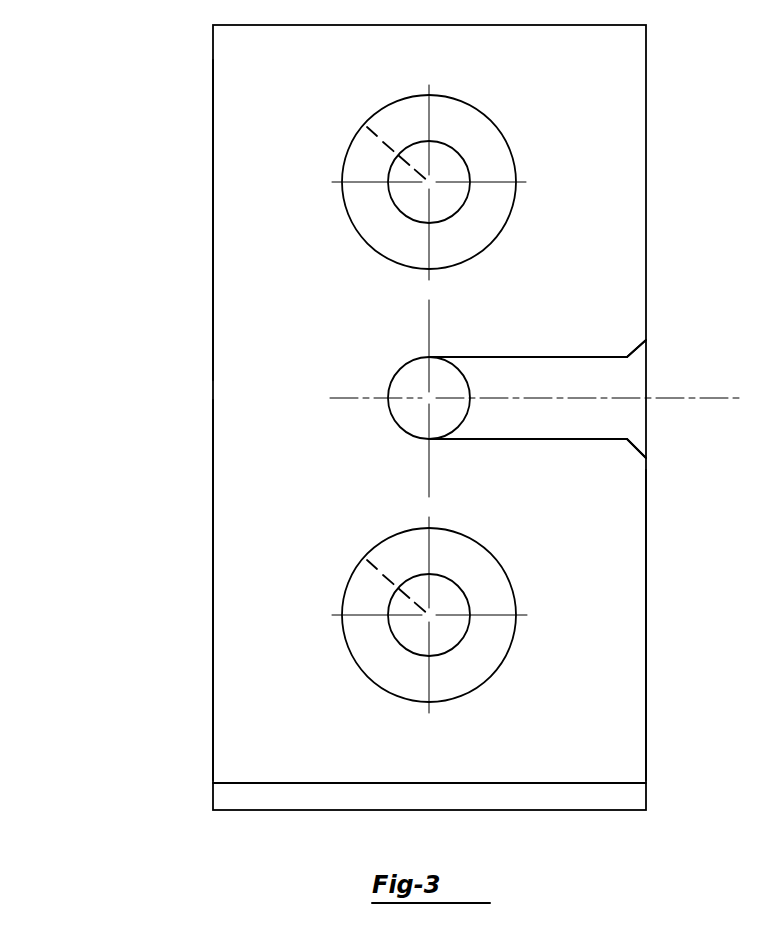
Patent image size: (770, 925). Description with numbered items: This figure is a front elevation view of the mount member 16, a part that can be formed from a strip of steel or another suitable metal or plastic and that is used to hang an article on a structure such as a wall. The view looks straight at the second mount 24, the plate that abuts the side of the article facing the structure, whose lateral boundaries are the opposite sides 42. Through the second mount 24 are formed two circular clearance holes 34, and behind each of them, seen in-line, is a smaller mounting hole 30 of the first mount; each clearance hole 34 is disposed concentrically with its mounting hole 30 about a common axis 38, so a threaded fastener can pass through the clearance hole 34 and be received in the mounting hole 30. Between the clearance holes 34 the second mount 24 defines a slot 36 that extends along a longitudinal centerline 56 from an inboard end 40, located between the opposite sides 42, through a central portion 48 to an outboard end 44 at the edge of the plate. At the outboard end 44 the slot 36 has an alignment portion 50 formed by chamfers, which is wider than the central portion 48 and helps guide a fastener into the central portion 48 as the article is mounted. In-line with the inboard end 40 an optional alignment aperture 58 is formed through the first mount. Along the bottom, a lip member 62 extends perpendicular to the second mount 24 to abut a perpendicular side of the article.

The mount member 16 is at (157, 118).
The second mount 24 is at (243, 205).
The mounting holes 30 is at (445, 162).
The clearance holes 34 is at (485, 227).
The slot 36 is at (600, 430).
The common axis 38 is at (367, 127).
The inboard end 40 is at (400, 427).
The opposite sides 42 is at (213, 556).
The outboard end 44 is at (638, 347).
The central portion 48 is at (507, 357).
The alignment portion 50 is at (632, 449).
The longitudinal centerline 56 is at (363, 398).
The alignment aperture 58 is at (452, 416).
The lip member 62 is at (606, 797).